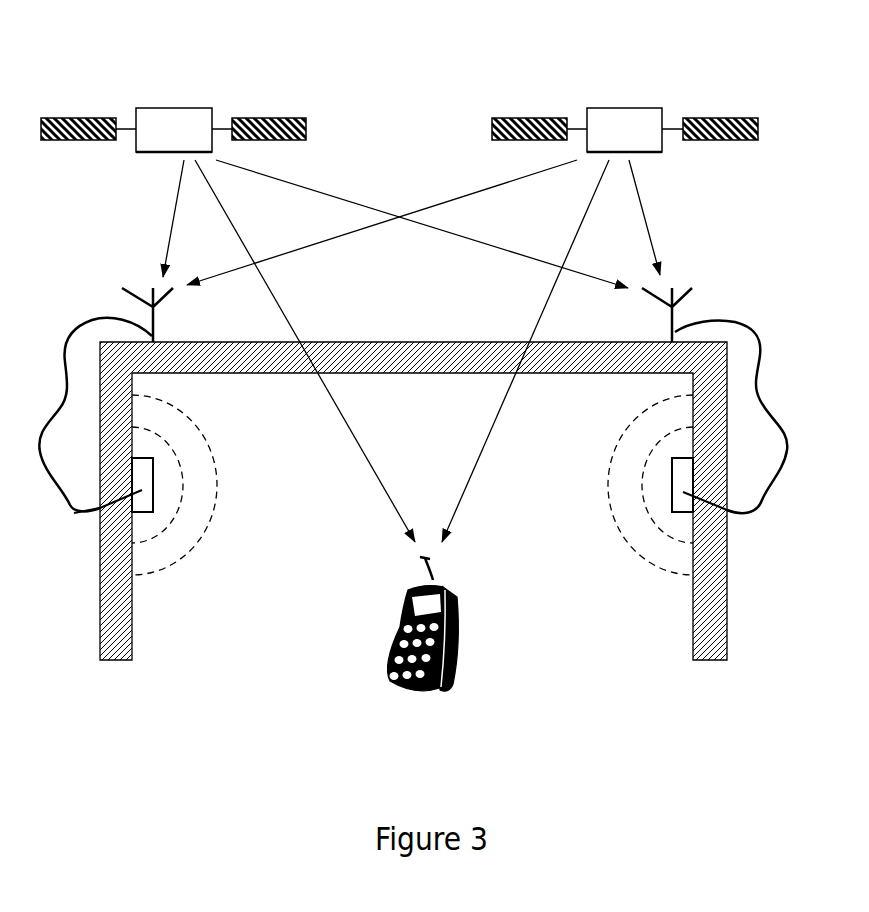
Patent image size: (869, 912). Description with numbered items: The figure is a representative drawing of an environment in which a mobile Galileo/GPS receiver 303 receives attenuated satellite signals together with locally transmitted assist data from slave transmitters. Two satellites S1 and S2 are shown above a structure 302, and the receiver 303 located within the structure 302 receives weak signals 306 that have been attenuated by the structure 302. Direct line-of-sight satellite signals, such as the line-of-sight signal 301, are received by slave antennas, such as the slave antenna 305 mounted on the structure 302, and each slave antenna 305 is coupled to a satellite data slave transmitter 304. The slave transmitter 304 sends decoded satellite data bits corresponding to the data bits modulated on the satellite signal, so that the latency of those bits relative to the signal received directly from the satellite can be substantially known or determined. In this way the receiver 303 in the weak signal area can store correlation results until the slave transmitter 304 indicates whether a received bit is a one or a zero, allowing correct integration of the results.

The satellite S1 is at (298, 96).
The satellite S2 is at (748, 97).
The line-of-sight signal 301 is at (655, 230).
The structure 302 is at (727, 627).
The Galileo/GPS receiver 303 is at (462, 605).
The satellite data slave transmitter 304 is at (680, 482).
The slave antenna 305 is at (700, 297).
The weak signals 306 is at (375, 492).